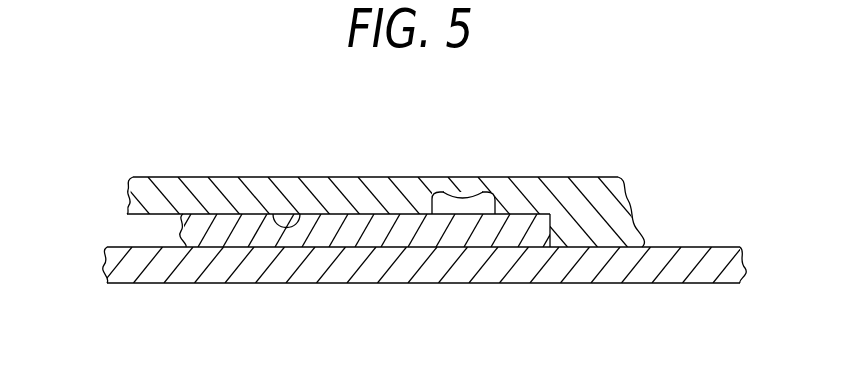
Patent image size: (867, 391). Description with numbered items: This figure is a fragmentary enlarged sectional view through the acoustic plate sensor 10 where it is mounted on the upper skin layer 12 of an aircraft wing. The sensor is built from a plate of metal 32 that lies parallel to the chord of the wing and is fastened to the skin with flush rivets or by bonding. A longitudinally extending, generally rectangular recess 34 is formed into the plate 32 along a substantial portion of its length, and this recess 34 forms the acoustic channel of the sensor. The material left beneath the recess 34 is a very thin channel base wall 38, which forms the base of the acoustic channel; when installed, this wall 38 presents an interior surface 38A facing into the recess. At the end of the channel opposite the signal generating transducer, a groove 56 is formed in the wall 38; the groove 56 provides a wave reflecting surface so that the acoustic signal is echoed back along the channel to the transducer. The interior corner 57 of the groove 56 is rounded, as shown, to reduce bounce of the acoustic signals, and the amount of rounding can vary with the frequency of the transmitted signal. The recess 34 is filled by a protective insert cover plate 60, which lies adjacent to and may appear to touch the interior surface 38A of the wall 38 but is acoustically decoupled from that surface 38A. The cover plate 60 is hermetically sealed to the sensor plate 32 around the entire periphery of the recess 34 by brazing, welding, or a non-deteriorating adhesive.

The acoustic plate sensor 10 is at (163, 168).
The upper skin layer 12 is at (177, 285).
The plate of metal 32 is at (630, 210).
The recess 34 is at (150, 228).
The channel base wall 38 is at (373, 183).
The interior surface 38A is at (300, 212).
The groove 56 is at (492, 192).
The interior corner 57 is at (483, 204).
The protective insert cover plate 60 is at (203, 223).